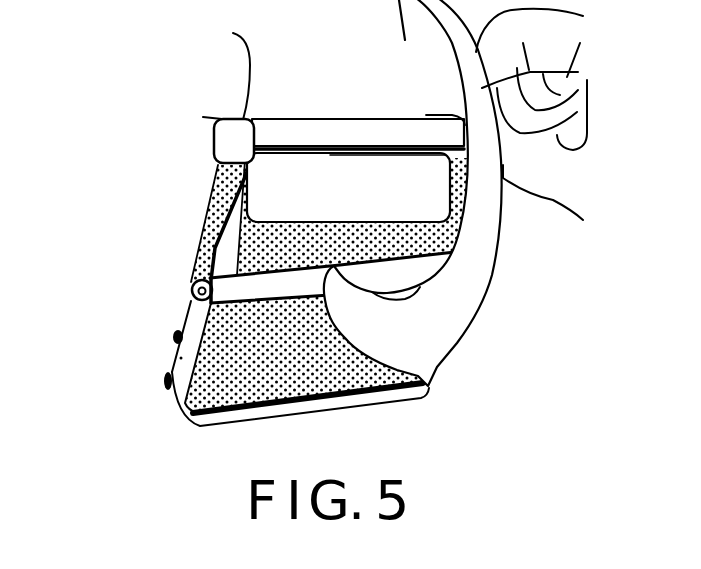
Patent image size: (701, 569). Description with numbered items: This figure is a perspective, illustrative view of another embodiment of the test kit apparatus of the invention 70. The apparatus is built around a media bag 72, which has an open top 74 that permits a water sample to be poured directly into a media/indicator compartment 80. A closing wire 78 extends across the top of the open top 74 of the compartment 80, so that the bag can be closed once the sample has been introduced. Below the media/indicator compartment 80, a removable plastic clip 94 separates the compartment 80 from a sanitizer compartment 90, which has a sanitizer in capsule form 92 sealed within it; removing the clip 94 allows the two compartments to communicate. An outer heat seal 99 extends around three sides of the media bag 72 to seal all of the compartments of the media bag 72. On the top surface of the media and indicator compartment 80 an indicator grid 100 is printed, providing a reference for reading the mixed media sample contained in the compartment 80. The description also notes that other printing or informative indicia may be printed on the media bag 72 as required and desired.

The test kit apparatus 70 is at (110, 125).
The media bag 72 is at (166, 234).
The open top 74 is at (424, 117).
The closing wire 78 is at (328, 118).
The media/indicator compartment 80 is at (235, 270).
The sanitizer compartment 90 is at (165, 367).
The sanitizer in capsule form 92 is at (170, 340).
The removable plastic clip 94 is at (177, 416).
The outer heat seal 99 is at (190, 250).
The indicator grid 100 is at (427, 200).